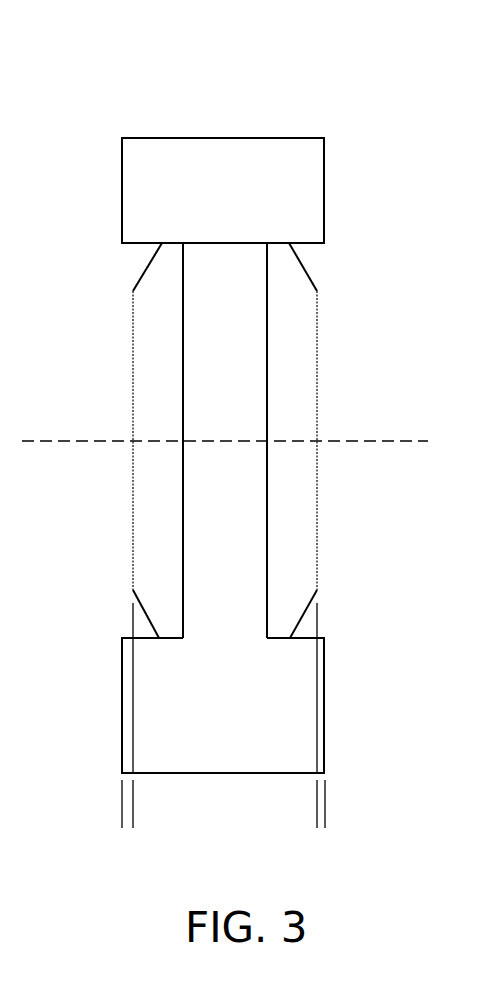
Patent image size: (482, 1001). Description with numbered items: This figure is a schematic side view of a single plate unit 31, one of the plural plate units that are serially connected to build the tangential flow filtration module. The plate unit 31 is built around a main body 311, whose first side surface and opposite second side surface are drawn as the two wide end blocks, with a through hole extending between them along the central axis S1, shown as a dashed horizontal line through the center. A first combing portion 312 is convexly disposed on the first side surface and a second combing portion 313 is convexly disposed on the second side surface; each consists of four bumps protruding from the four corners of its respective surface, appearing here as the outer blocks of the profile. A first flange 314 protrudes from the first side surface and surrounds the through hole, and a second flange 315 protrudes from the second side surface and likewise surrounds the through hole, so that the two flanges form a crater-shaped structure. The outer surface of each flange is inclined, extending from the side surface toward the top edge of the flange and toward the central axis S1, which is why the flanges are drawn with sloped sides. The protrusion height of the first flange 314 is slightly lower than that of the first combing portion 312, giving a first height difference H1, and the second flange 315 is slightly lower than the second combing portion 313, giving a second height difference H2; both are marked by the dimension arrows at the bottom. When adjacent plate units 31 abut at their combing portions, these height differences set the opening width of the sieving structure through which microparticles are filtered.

The plate unit 31 is at (138, 111).
The main body 311 is at (223, 167).
The first combing portion 312 is at (324, 163).
The second combing portion 313 is at (122, 192).
The first flange 314 is at (295, 566).
The second flange 315 is at (160, 597).
The central axis S1 is at (390, 441).
The first height difference H1 is at (380, 823).
The second height difference H2 is at (188, 823).